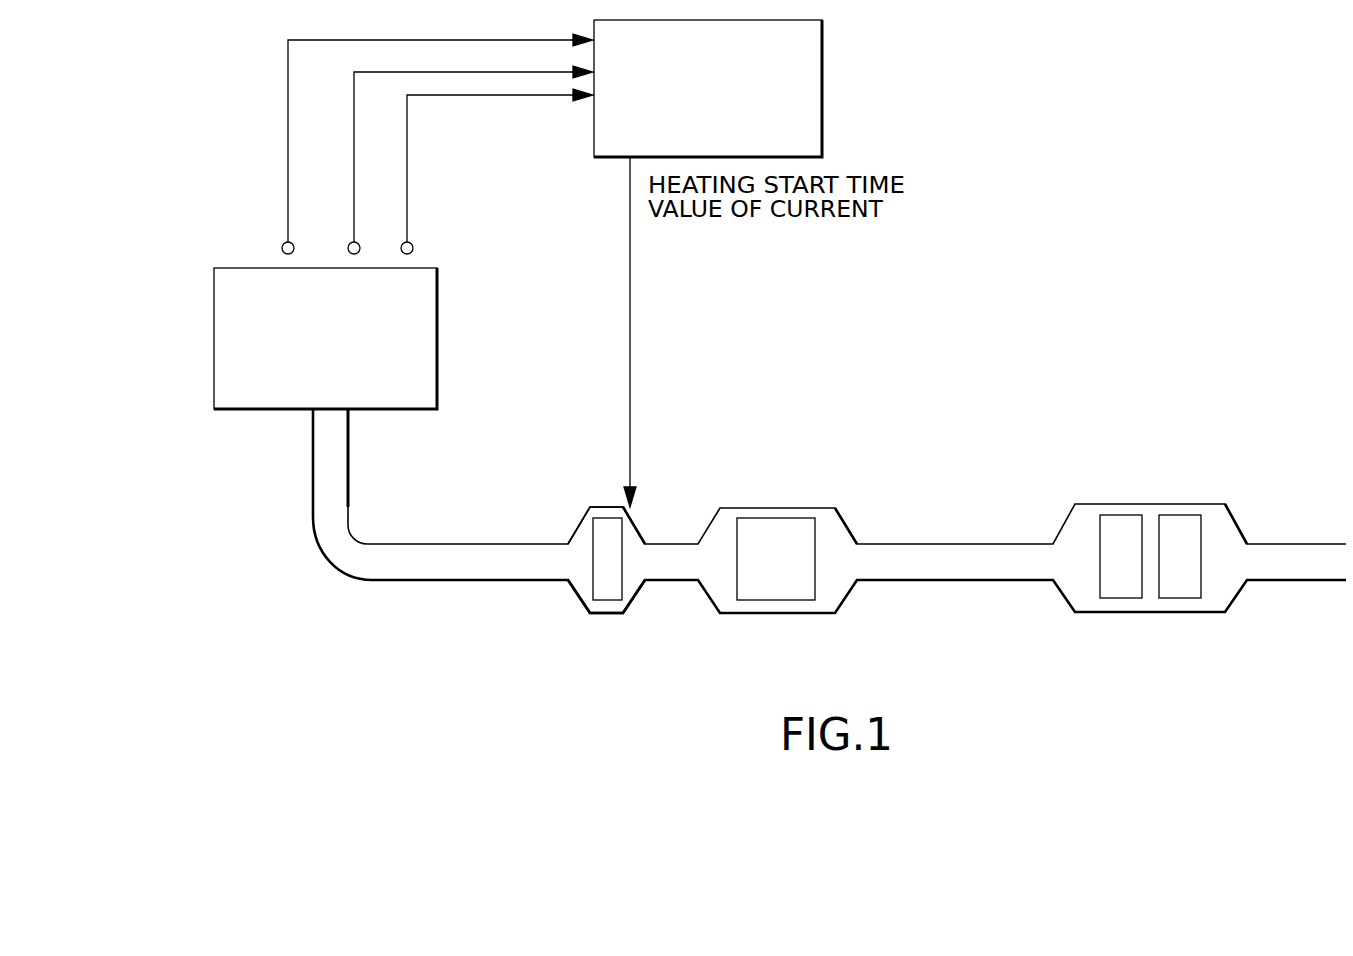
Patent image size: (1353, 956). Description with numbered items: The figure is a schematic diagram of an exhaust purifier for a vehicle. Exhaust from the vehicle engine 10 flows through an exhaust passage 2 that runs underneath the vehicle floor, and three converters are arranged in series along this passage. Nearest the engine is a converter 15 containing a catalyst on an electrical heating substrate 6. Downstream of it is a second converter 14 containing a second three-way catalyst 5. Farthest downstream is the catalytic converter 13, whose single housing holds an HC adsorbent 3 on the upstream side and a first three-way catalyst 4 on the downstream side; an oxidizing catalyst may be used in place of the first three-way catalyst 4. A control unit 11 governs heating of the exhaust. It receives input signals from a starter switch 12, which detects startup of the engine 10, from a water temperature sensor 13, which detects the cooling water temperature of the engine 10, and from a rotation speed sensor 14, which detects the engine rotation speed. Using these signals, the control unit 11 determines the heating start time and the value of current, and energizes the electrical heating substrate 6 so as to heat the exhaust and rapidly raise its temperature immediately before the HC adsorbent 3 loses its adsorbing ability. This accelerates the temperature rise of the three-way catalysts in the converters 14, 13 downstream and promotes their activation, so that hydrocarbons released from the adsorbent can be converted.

The exhaust passage 2 is at (935, 540).
The HC adsorbent 3 is at (1122, 598).
The first three-way catalyst 4 is at (1182, 598).
The second three-way catalyst 5 is at (770, 600).
The electrical heating substrate 6 is at (608, 600).
The vehicle engine 10 is at (438, 380).
The control unit 11 is at (823, 40).
The starter switch 12 is at (413, 249).
The catalytic converter 13 is at (360, 246).
The second converter 14 is at (777, 508).
The converter 15 is at (593, 507).